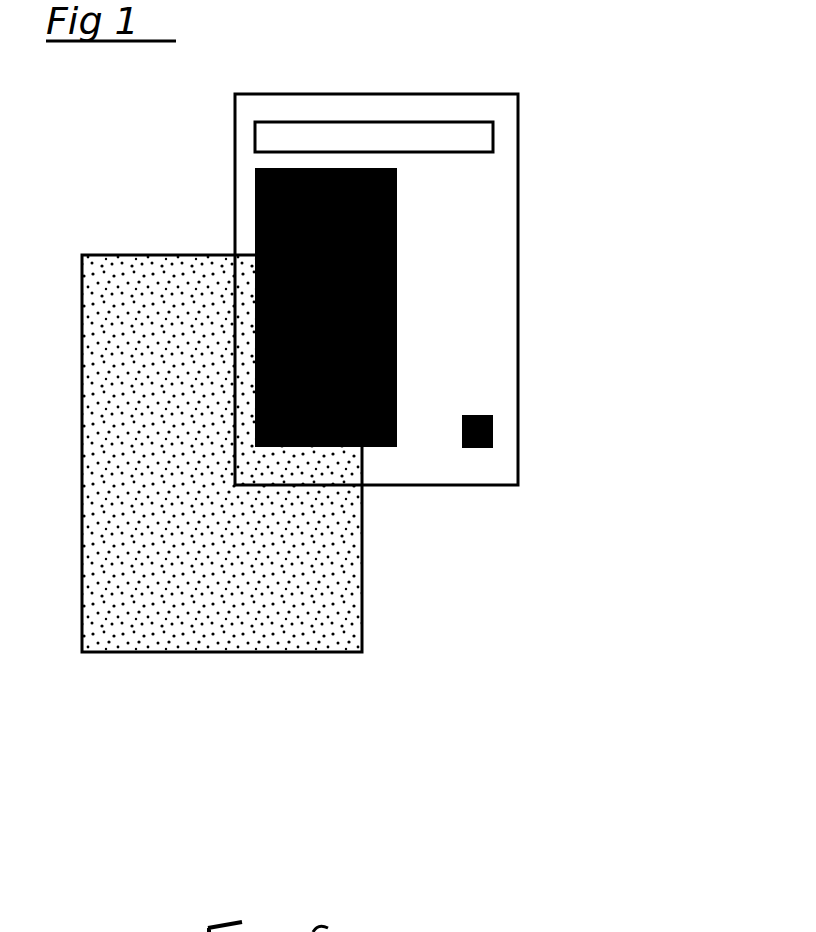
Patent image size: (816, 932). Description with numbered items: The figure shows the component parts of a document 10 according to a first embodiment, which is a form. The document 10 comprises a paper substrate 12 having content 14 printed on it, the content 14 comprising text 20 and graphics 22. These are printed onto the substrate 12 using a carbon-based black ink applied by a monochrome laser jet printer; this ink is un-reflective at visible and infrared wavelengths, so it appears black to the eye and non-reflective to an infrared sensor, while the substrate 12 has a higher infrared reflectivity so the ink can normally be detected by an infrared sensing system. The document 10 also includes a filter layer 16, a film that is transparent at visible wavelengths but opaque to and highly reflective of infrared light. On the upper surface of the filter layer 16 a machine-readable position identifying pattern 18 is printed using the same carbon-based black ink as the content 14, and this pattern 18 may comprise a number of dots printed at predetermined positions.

The document 10 is at (563, 133).
The paper substrate 12 is at (493, 243).
The content 14 is at (443, 325).
The filter layer 16 is at (272, 502).
The machine-readable position identifying pattern 18 is at (270, 630).
The text 20 is at (433, 393).
The graphics 22 is at (253, 187).